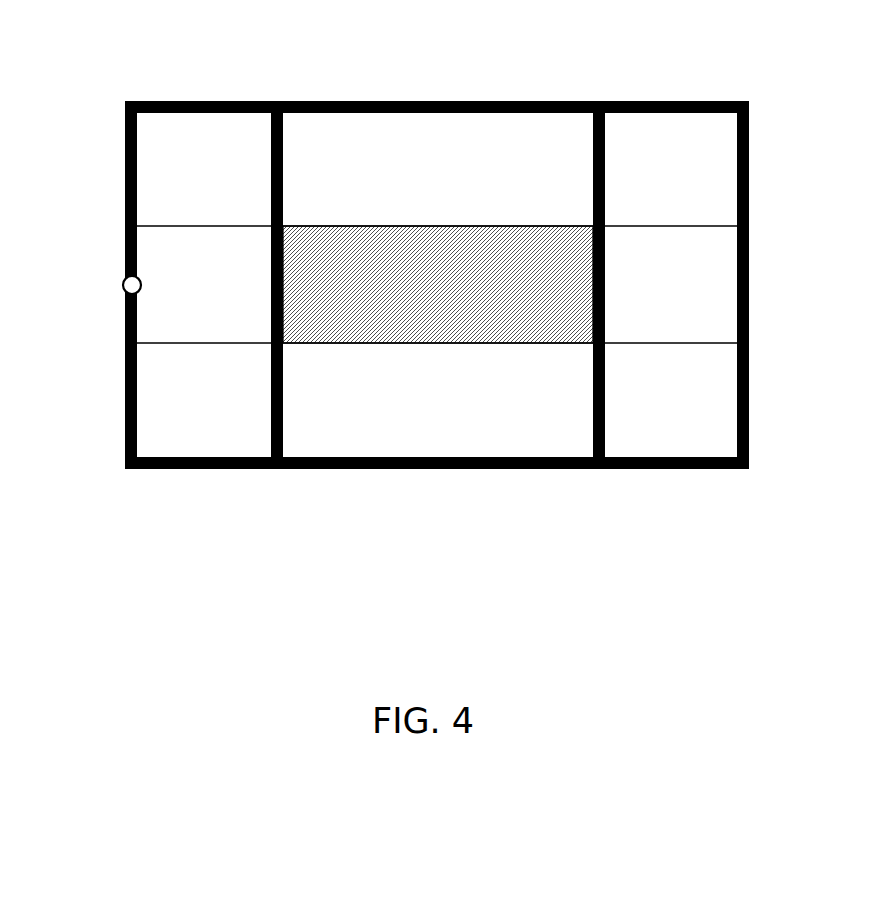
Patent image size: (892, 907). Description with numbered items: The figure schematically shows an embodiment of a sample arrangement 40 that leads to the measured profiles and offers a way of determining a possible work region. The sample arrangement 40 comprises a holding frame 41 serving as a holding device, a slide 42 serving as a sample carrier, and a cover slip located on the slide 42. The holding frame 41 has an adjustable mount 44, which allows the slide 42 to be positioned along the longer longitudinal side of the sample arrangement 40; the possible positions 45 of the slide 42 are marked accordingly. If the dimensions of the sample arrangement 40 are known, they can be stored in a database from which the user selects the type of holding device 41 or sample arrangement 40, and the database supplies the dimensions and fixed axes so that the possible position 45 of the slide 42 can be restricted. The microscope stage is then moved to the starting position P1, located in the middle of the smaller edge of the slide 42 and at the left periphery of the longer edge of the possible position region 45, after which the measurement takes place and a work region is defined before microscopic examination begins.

The sample arrangement 40 is at (203, 478).
The holding frame 41 is at (190, 100).
The slide 42 is at (408, 265).
The adjustable mount 44 is at (277, 99).
The possible positions 45 is at (157, 241).
The starting position P1 is at (113, 285).